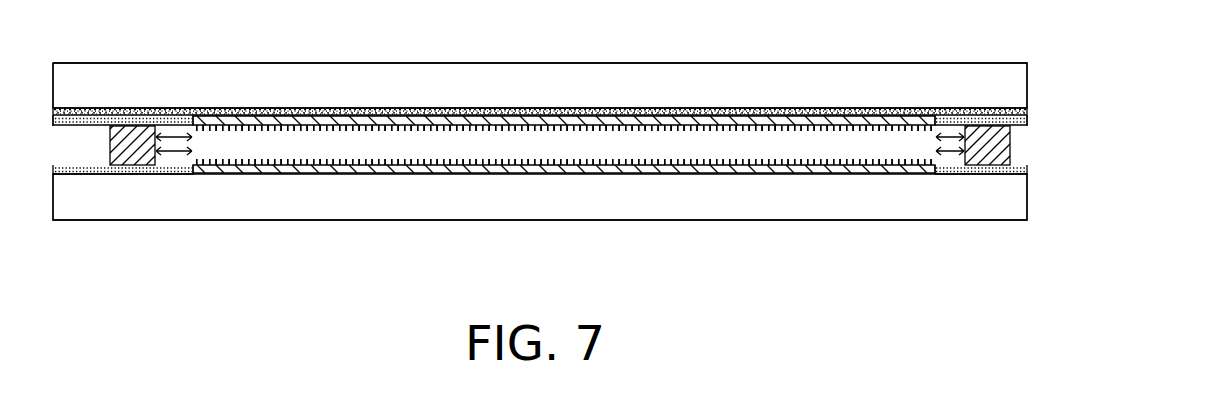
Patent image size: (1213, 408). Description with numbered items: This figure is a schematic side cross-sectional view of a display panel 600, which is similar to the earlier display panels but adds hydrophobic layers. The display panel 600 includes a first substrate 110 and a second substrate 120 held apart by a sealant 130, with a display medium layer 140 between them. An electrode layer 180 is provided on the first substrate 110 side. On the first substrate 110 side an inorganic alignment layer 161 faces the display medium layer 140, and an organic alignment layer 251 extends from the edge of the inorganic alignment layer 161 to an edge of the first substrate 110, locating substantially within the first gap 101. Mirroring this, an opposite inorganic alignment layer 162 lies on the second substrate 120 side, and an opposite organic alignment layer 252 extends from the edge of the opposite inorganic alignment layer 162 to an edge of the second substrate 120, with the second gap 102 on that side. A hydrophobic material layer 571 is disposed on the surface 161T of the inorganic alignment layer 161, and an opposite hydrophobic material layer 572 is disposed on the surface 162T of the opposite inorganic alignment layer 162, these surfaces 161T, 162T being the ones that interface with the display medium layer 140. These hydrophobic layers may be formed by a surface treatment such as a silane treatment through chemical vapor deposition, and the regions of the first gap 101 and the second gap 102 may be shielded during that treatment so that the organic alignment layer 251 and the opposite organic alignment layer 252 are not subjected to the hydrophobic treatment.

The display panel 600 is at (1196, 289).
The first substrate 110 is at (1012, 78).
The electrode layer 180 is at (1023, 112).
The organic alignment layer 251 is at (1023, 121).
The opposite organic alignment layer 252 is at (1023, 172).
The second substrate 120 is at (1018, 207).
The inorganic alignment layer 161 is at (820, 122).
The opposite inorganic alignment layer 162 is at (865, 170).
The surface of the inorganic alignment layer 161T is at (582, 136).
The surface of the opposite inorganic alignment layer 162T is at (497, 176).
The hydrophobic material layer 571 is at (385, 128).
The opposite hydrophobic material layer 572 is at (367, 160).
The display medium layer 140 is at (725, 150).
The sealant 130 is at (998, 145).
The first gap 101 is at (173, 137).
The second gap 102 is at (173, 151).